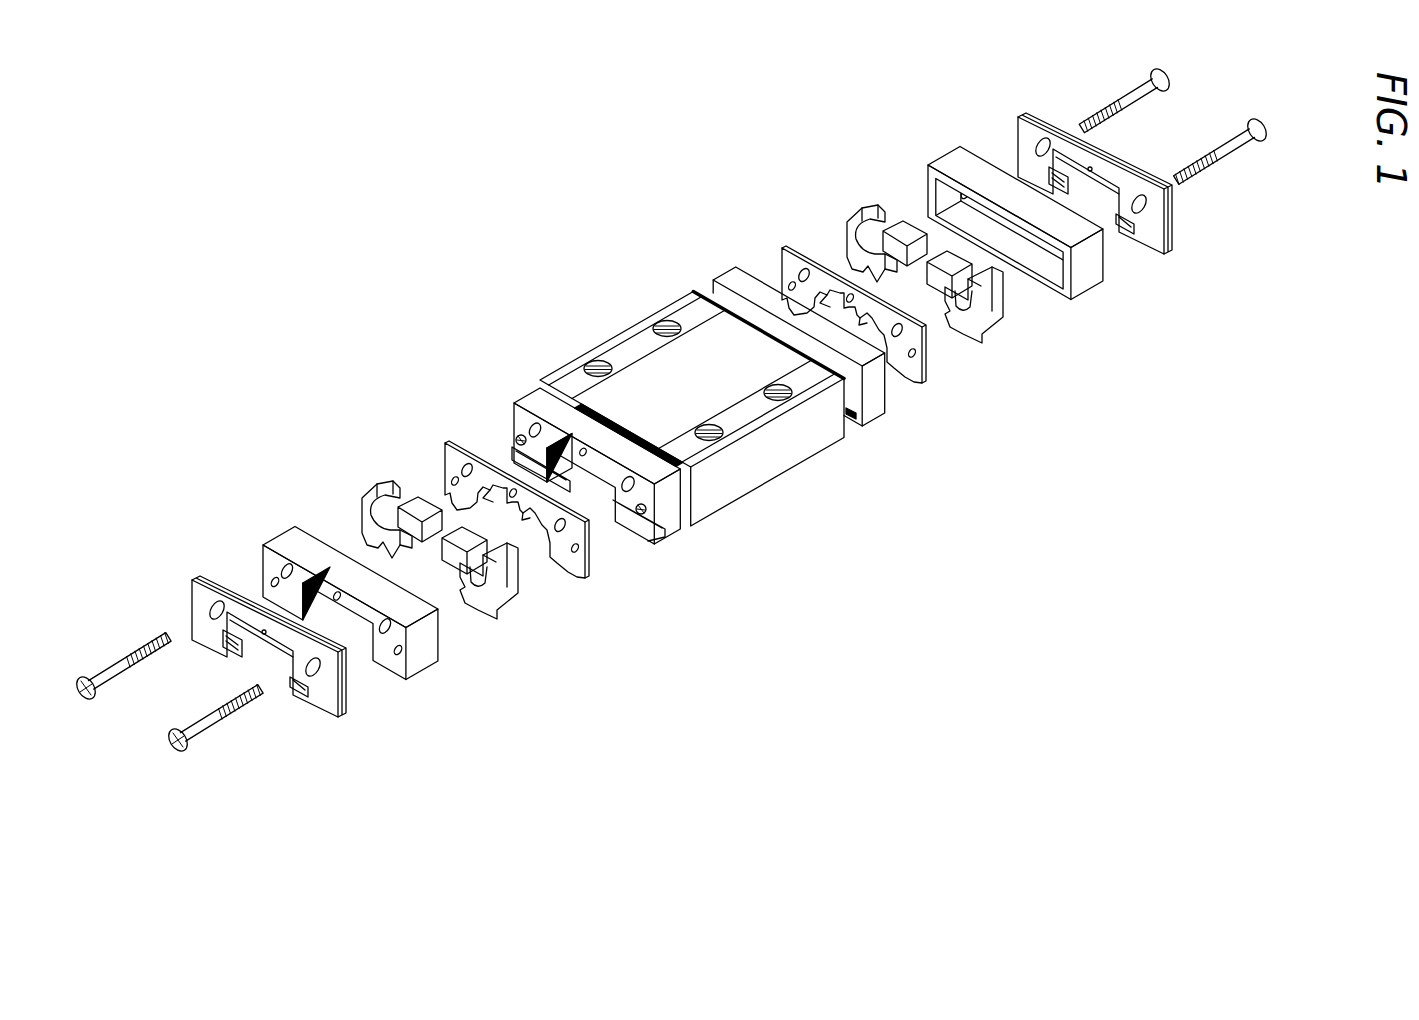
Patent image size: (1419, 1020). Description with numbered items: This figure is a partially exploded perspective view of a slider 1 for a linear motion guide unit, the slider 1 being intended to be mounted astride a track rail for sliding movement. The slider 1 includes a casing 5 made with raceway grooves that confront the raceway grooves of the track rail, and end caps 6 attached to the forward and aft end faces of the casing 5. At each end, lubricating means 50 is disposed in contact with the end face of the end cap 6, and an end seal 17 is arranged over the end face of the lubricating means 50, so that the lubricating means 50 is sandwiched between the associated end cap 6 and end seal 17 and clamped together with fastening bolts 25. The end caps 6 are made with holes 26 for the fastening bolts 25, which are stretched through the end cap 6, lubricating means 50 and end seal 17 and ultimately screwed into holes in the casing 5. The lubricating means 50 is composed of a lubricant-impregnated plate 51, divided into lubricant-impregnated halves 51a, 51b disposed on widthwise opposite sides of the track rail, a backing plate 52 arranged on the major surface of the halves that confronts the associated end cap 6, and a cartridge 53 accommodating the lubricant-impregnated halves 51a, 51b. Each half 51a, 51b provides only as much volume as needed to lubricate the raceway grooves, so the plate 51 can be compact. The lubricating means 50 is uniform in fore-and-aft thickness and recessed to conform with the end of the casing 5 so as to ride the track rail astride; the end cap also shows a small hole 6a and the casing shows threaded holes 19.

The slider 1 is at (771, 484).
The casing 5 is at (632, 345).
The end cap 6 is at (732, 298).
The small hole in end plate 6a is at (582, 448).
The end seal 17 is at (232, 595).
The threaded mounting hole 19 is at (596, 361).
The fastening bolt 25 is at (112, 668).
The hole 26 is at (532, 427).
The lubricating means 50 is at (408, 712).
The lubricant-impregnated plate 51 is at (688, 402).
The lubricant-impregnated half 51a is at (492, 607).
The lubricant-impregnated half 51b is at (380, 483).
The backing plate 52 is at (447, 448).
The cartridge 53 is at (300, 542).